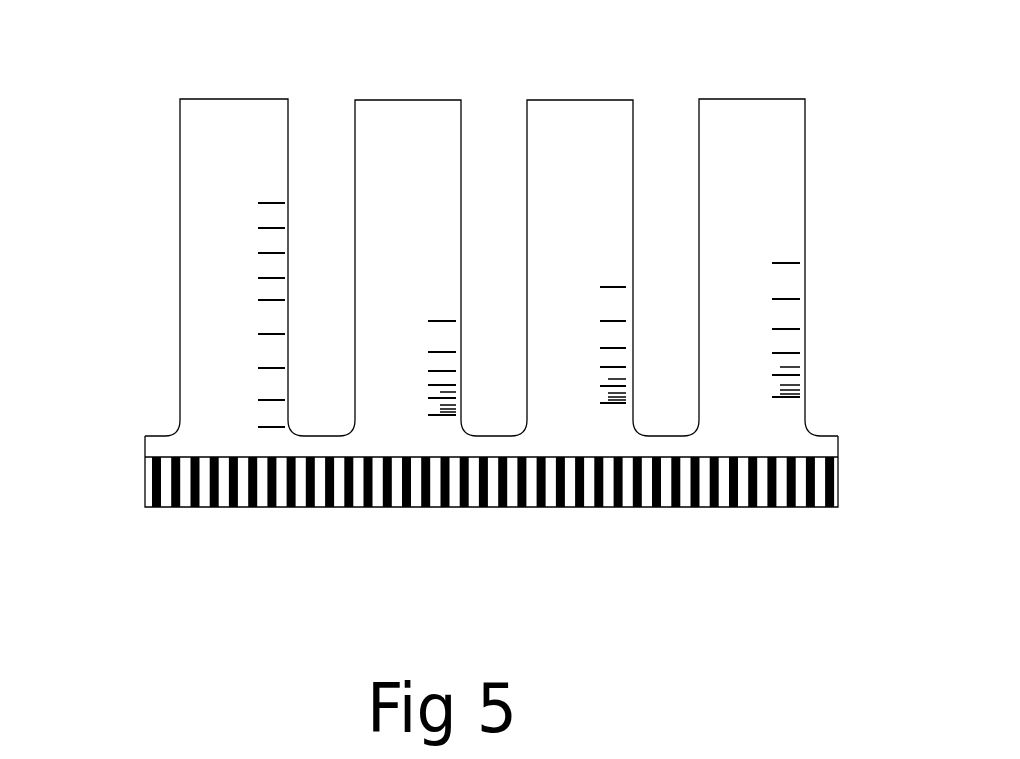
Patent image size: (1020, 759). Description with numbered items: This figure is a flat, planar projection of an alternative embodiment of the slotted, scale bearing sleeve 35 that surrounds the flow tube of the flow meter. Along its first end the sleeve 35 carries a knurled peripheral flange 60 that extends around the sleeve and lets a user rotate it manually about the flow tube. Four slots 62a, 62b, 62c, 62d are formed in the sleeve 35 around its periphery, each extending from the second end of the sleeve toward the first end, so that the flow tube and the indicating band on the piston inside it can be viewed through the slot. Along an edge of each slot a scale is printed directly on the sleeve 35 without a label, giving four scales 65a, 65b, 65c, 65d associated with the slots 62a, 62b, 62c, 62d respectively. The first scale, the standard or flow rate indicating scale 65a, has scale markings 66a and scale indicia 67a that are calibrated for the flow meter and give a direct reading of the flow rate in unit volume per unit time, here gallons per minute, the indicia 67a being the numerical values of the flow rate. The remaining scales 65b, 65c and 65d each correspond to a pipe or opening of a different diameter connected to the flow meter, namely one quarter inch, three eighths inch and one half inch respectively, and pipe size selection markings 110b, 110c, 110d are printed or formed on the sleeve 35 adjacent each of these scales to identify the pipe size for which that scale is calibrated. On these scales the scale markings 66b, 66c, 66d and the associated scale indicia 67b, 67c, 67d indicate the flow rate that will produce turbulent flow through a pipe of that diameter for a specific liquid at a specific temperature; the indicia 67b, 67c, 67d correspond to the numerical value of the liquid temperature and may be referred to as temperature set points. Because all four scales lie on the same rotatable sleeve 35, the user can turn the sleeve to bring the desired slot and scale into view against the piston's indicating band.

The scale bearing sleeve 35 is at (150, 110).
The knurled peripheral flange 60 is at (140, 480).
The slot 62a is at (288, 110).
The slot 62b is at (461, 108).
The slot 62c is at (633, 115).
The slot 62d is at (805, 113).
The pipe size selection marking 110b is at (382, 112).
The pipe size selection marking 110c is at (552, 112).
The pipe size selection marking 110d is at (725, 110).
The flow rate indicating scale 65a is at (195, 262).
The scale 65b is at (397, 309).
The scale 65c is at (565, 281).
The scale 65d is at (737, 296).
The scale indicia 67a is at (213, 338).
The scale indicia 67b is at (393, 362).
The scale indicia 67c is at (568, 347).
The scale indicia 67d is at (735, 347).
The scale markings 66a is at (270, 437).
The scale markings 66b is at (444, 425).
The scale markings 66c is at (613, 413).
The scale markings 66d is at (790, 403).